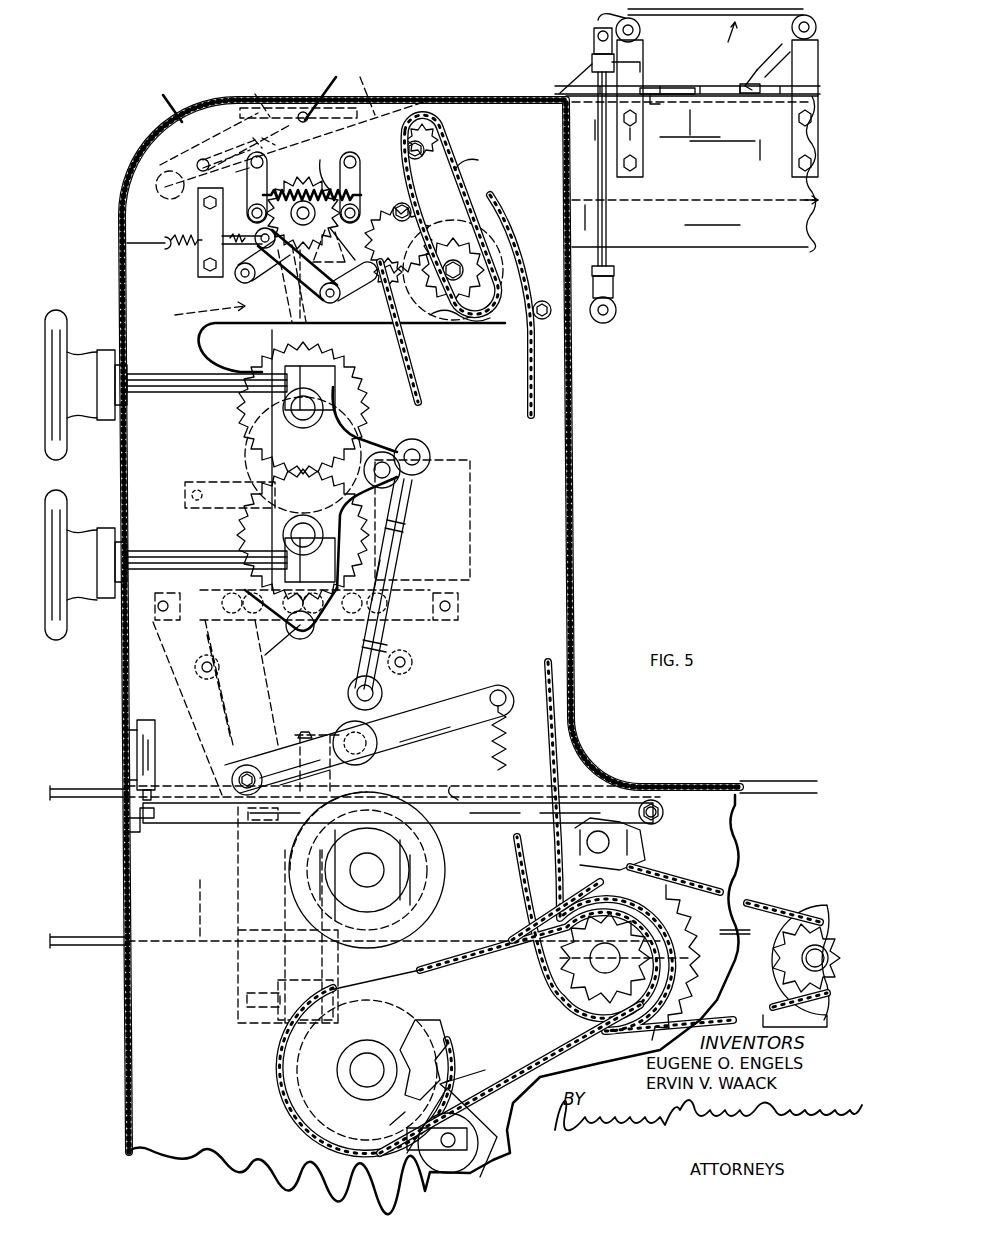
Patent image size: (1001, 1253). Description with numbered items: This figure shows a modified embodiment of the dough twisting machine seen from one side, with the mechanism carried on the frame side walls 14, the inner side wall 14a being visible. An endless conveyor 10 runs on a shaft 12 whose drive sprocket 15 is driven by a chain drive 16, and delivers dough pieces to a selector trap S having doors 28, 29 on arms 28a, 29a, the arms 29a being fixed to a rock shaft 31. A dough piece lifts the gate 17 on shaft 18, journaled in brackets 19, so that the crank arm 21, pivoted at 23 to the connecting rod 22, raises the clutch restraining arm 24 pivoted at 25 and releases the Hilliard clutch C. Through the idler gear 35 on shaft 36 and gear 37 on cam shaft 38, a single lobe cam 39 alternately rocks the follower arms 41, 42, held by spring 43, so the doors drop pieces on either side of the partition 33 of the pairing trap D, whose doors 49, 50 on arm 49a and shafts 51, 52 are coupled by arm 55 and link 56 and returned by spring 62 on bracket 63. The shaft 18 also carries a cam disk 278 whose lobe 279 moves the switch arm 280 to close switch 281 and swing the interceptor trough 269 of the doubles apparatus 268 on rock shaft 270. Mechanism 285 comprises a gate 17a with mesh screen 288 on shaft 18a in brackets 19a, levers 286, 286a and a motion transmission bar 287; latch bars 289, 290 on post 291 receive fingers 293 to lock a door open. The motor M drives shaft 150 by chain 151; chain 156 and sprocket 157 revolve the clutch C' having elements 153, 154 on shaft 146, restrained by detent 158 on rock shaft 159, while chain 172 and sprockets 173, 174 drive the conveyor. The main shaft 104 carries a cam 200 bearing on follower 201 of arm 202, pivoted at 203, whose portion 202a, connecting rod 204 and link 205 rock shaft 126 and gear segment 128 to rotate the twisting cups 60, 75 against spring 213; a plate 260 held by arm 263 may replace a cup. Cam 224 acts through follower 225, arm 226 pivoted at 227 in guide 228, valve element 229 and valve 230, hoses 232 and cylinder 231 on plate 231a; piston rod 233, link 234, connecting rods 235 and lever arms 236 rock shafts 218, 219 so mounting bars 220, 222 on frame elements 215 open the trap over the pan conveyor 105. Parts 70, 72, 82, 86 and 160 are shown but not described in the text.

The endless conveyor 10 is at (800, 202).
The shaft 12 is at (445, 145).
The housing 14 is at (434, 1004).
The inner side wall 14a is at (590, 484).
The drive sprocket 15 is at (476, 154).
The chain drive 16 is at (470, 187).
The gate 17 is at (562, 79).
The flap 17a is at (752, 66).
The shaft 18 is at (642, 29).
The shaft 18a is at (760, 85).
The bearing brackets 19 is at (640, 145).
The bearing brackets 19a is at (792, 145).
The crank arm 21 is at (592, 35).
The connecting rod 22 is at (608, 221).
The pivot 23 is at (590, 59).
The clutch restraining arm 24 is at (603, 320).
The pivot 25 is at (542, 297).
The door 28 is at (246, 183).
The arms 28a is at (277, 135).
The door 29 is at (360, 215).
The arms 29a is at (412, 133).
The rock shaft 31 is at (408, 148).
The central partition 33 is at (287, 286).
The idler gear 35 is at (453, 263).
The shaft 36 is at (398, 238).
The gear 37 is at (327, 156).
The cam shaft 38 is at (348, 244).
The single lobe cam 39 is at (287, 283).
The follower arm 41 is at (237, 168).
The follower arm 42 is at (356, 197).
The spring 43 is at (303, 177).
The trap door 49 is at (270, 327).
The arms 49a is at (196, 255).
The trap door 50 is at (365, 337).
The rock shaft 51 is at (235, 280).
The rock shaft 52 is at (391, 272).
The arm 55 is at (352, 295).
The connecting link 56 is at (296, 264).
The twisting cup 60 is at (240, 405).
The return spring 62 is at (243, 231).
The bracket 63 is at (140, 241).
The shaft 70 is at (165, 389).
The handwheel 72 is at (60, 457).
The twisting cup 75 is at (240, 531).
The shaft 82 is at (165, 549).
The handwheel 86 is at (58, 637).
The main cam shaft 104 is at (360, 872).
The conveyor 105 is at (105, 794).
The rock shaft 126 is at (415, 467).
The gear segment 128 is at (412, 529).
The shaft 146 is at (415, 1047).
The shaft 150 is at (612, 937).
The chain 151 is at (758, 897).
The driving element 153 is at (432, 1037).
The driven element 154 is at (440, 1077).
The chain 156 is at (420, 965).
The sprocket 157 is at (640, 942).
The detent 158 is at (495, 1129).
The rock shaft 159 is at (468, 1112).
The sprocket 160 is at (485, 1152).
The chain 172 is at (540, 397).
The sprocket 173 is at (620, 885).
The sprocket 174 is at (407, 332).
The cam 200 is at (445, 877).
The cam follower 201 is at (337, 732).
The arm 202 is at (440, 727).
The projecting portion 202a is at (352, 681).
The pivot 203 is at (248, 762).
The connecting rod 204 is at (395, 575).
The link 205 is at (392, 442).
The spring 213 is at (520, 727).
The frame elements 215 is at (220, 572).
The shaft 218 is at (225, 604).
The shaft 219 is at (390, 604).
The mounting bars 220 is at (258, 637).
The mounting bars 222 is at (346, 622).
The cam 224 is at (440, 847).
The follower 225 is at (432, 807).
The arm 226 is at (459, 779).
The pivot 227 is at (668, 809).
The guide 228 is at (135, 829).
The valve element 229 is at (156, 809).
The valve 230 is at (155, 762).
The double acting cylinder 231 is at (280, 905).
The plate 231a is at (235, 902).
The hoses 232 is at (262, 835).
The piston rod 233 is at (312, 732).
The link 234 is at (276, 739).
The connecting rods 235 is at (405, 689).
The lever arms 236 is at (298, 652).
The plate 260 is at (480, 492).
The arm 263 is at (388, 429).
The doubles eliminating apparatus 268 is at (216, 136).
The interceptor trough 269 is at (322, 89).
The rock shaft 270 is at (197, 165).
The cam disk 278 is at (648, 63).
The lobe 279 is at (680, 25).
The switch arm 280 is at (655, 87).
The switch 281 is at (660, 101).
The trap opening mechanism 285 is at (717, 39).
The lever 286 is at (790, 19).
The lever 286a is at (598, 19).
The motion transmission bar 287 is at (782, 49).
The mesh screen 288 is at (712, 85).
The latch bar 289 is at (383, 87).
The latch bar 290 is at (276, 88).
The post 291 is at (298, 99).
The extension finger 293 is at (240, 97).
The Hilliard clutch C is at (470, 333).
The single revolution clutch C' is at (470, 1074).
The pairing trap D is at (201, 312).
The motor M is at (812, 897).
The selector trap S is at (329, 249).